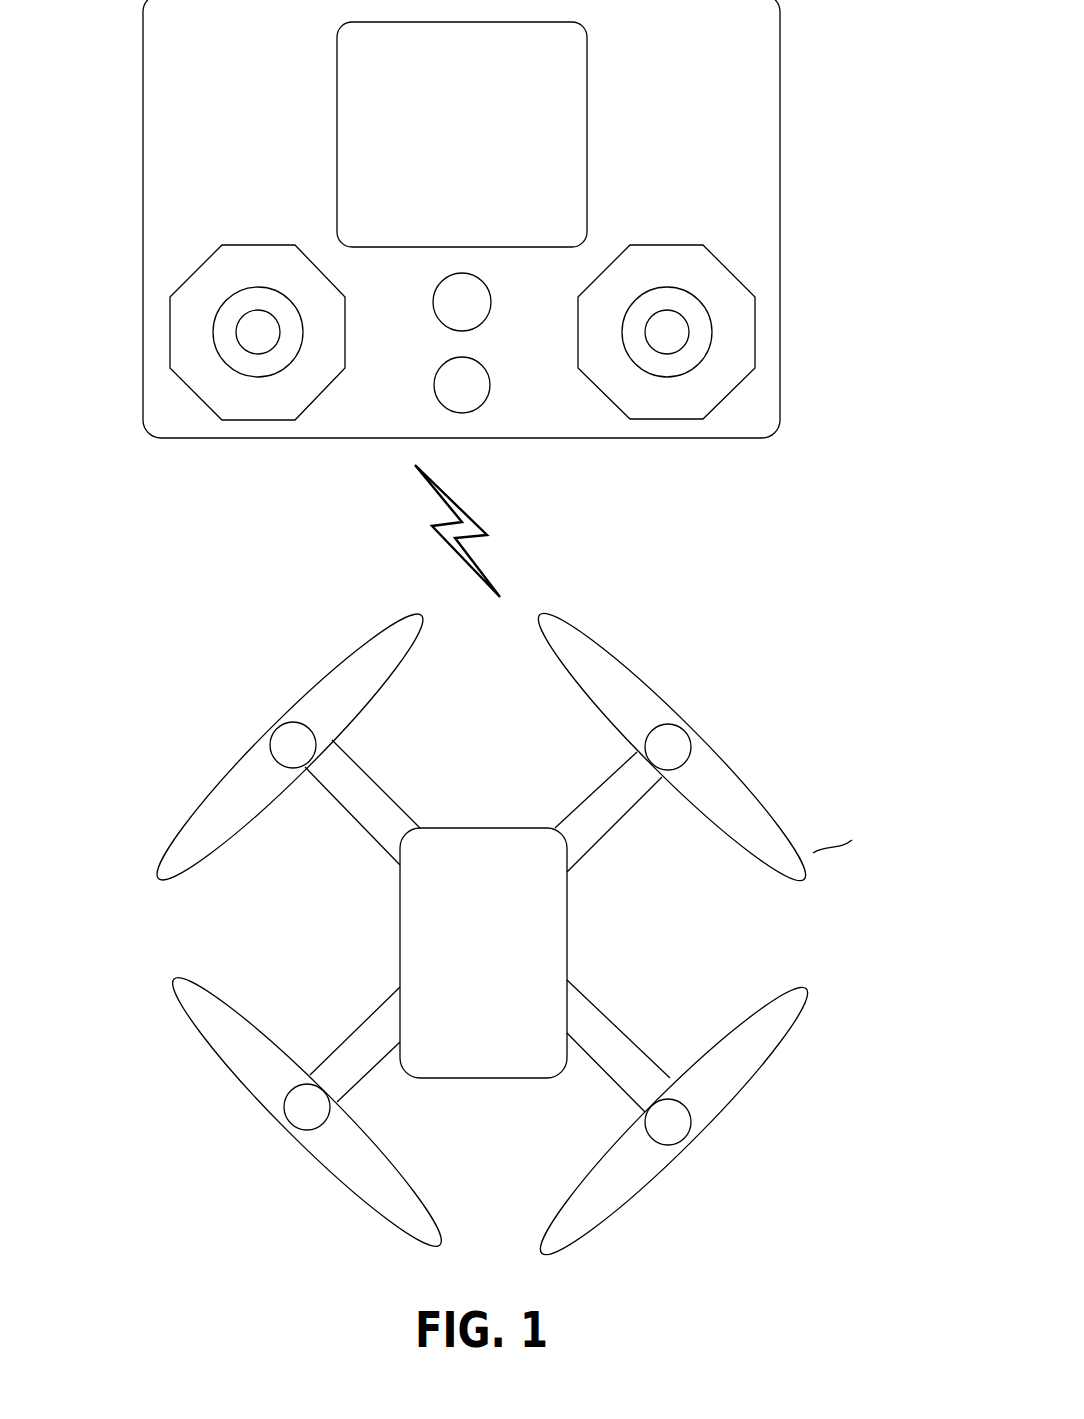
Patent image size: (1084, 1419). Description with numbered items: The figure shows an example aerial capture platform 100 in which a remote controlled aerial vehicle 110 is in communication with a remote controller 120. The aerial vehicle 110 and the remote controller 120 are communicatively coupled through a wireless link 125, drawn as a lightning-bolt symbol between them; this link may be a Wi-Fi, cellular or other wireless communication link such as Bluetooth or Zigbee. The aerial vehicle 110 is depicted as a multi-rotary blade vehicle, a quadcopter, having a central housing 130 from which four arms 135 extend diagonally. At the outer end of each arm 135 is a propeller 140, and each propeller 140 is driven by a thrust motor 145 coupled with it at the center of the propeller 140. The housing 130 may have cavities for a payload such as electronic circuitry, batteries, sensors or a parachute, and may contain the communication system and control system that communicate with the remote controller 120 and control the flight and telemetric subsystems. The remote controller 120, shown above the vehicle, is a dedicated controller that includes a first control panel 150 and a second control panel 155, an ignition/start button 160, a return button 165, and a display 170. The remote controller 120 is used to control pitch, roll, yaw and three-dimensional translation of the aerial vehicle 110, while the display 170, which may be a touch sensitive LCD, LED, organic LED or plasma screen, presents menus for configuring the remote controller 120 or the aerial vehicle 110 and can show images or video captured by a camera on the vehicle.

The aerial capture platform 100 is at (815, 1250).
The remote controlled aerial vehicle 110 is at (730, 919).
The remote controller 120 is at (780, 217).
The wireless link 125 is at (476, 531).
The housing 130 is at (460, 827).
The arm 135 is at (395, 802).
The propeller 140 is at (218, 783).
The thrust motor 145 is at (285, 737).
The first control panel 150 is at (233, 420).
The second control panel 155 is at (680, 419).
The ignition/start button 160 is at (490, 312).
The return button 165 is at (490, 395).
The display 170 is at (587, 115).